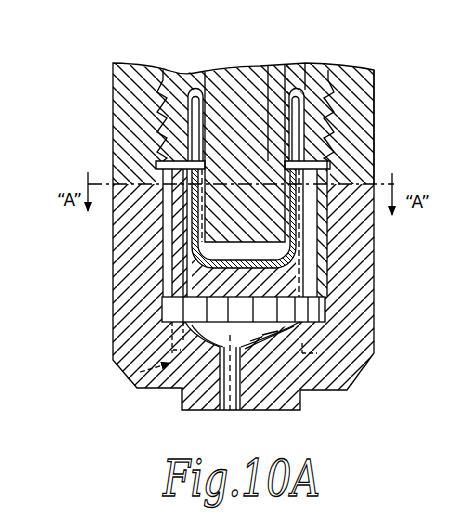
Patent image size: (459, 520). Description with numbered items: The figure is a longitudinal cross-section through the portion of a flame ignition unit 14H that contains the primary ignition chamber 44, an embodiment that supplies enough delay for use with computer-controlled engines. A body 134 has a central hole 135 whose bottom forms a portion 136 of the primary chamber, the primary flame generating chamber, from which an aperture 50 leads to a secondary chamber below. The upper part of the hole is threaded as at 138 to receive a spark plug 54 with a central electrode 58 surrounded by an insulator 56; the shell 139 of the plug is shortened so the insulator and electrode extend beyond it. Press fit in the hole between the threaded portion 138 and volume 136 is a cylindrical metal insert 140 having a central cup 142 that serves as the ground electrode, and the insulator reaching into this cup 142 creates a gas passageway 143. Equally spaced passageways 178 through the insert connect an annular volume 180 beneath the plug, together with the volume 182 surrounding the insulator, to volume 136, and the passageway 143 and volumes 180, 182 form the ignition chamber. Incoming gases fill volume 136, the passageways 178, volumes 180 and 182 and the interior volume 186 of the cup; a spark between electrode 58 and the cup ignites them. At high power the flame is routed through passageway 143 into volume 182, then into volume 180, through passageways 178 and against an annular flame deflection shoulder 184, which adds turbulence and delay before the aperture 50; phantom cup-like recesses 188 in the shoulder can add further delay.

The hydraulic fitting body 14H is at (146, 411).
The central electrode 58 is at (242, 68).
The insulator 56 is at (291, 66).
The shell 139 is at (176, 70).
The volume surrounding the insulator 182 is at (186, 100).
The spark plug 54 is at (153, 106).
The threaded portion 138 is at (336, 116).
The central hole 135 is at (160, 176).
The annular volume 180 is at (330, 165).
The body 134 is at (376, 90).
The cylindrical metal insert 140 is at (168, 262).
The passageways 178 is at (178, 289).
The interior volume of the cup 186 is at (281, 265).
The central cup 142 is at (296, 247).
The gas passageway 143 is at (294, 186).
The primary flame generating chamber portion 136 is at (326, 307).
The annular flame deflection shoulder 184 is at (213, 311).
The primary ignition chamber 44 is at (266, 315).
The aperture 50 is at (220, 410).
The cup-like recesses 188 is at (123, 382).